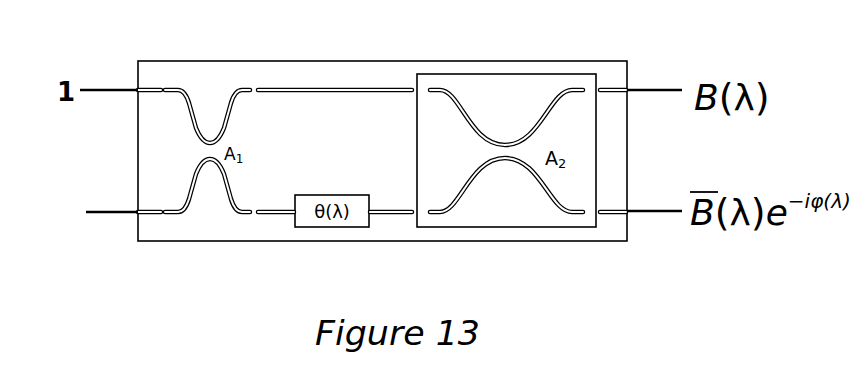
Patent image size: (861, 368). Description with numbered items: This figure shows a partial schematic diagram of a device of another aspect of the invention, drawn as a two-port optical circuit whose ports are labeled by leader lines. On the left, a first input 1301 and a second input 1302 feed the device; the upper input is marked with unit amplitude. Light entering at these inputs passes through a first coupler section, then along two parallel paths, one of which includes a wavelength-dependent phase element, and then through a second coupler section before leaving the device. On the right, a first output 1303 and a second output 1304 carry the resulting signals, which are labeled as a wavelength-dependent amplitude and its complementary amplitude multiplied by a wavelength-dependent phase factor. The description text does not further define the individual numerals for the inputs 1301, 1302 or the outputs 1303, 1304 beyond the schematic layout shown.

The first input port 1301 is at (124, 80).
The second input port 1302 is at (125, 222).
The first output port 1303 is at (655, 82).
The second output port 1304 is at (657, 218).